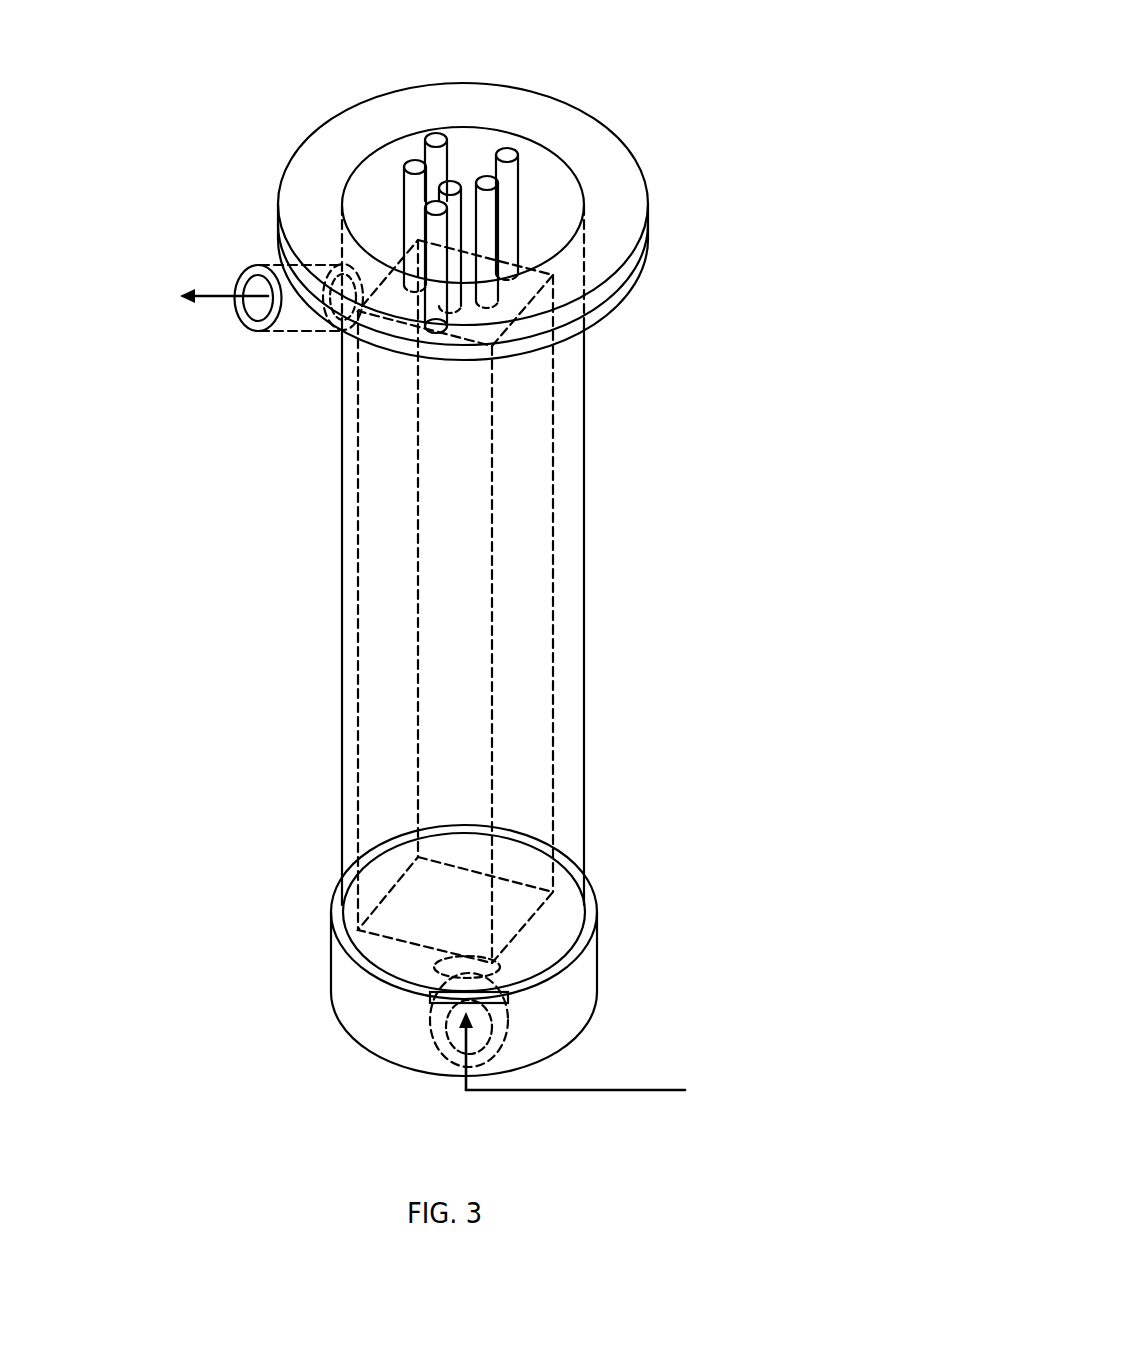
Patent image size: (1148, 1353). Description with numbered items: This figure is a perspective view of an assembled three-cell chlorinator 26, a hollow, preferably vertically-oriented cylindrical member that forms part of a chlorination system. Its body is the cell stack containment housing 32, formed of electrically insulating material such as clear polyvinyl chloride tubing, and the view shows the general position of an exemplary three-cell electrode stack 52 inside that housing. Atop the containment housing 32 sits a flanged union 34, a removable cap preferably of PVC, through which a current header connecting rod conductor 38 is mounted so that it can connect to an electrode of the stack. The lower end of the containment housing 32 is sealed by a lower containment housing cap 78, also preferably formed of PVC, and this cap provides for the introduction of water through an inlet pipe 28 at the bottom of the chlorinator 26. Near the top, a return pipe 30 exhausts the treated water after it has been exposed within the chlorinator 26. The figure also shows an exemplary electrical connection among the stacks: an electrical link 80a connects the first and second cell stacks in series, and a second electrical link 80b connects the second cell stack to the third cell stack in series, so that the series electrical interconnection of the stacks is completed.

The chlorinator 26 is at (220, 757).
The inlet pipe 28 is at (510, 1030).
The return pipe 30 is at (240, 310).
The cell stack containment housing 32 is at (585, 553).
The flanged union 34 is at (620, 310).
The current header connecting rod conductor 38 is at (530, 167).
The three-cell electrode stack 52 is at (553, 688).
The lower containment housing cap 78 is at (598, 969).
The electrical link 80a is at (407, 192).
The electrical link 80b is at (466, 140).